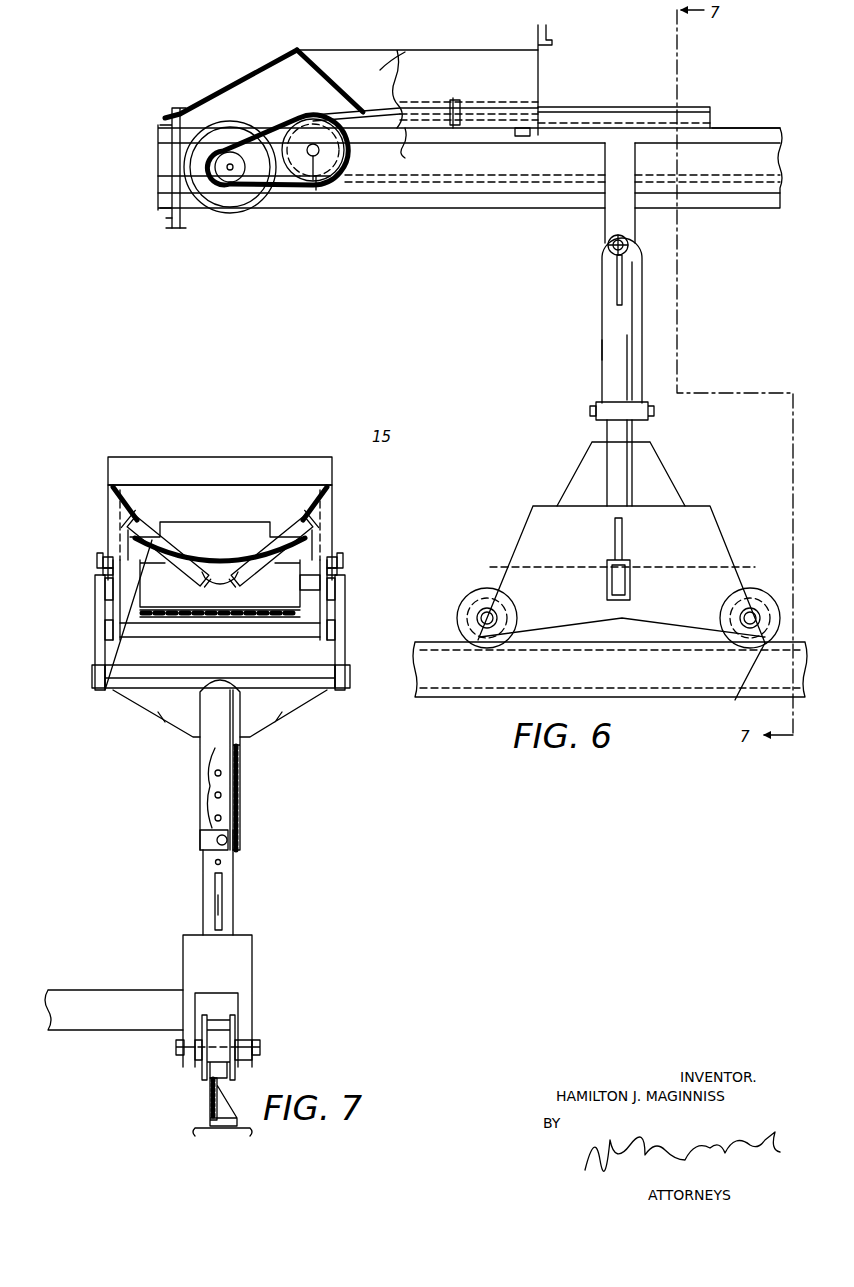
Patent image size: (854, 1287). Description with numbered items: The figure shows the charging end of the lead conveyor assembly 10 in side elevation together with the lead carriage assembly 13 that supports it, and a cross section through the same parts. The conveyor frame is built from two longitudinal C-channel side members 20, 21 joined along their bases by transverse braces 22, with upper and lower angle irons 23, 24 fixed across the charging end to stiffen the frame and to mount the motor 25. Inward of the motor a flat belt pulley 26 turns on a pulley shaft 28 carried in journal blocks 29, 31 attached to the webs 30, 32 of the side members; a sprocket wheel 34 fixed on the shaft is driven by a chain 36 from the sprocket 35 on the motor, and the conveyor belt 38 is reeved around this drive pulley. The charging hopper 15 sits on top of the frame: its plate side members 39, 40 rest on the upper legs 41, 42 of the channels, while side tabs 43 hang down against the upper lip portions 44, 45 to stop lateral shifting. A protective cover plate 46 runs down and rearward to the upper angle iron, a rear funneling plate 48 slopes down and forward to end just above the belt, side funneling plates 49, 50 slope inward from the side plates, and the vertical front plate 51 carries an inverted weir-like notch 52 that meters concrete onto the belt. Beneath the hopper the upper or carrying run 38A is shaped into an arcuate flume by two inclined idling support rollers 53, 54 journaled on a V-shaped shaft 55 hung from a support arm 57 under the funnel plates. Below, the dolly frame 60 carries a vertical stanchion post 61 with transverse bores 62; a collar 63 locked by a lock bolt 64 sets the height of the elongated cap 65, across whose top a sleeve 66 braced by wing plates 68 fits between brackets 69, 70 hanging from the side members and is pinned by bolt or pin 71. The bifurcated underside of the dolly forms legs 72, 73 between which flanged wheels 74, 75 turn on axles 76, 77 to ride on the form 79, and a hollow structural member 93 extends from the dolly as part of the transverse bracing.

In FIG. 6, the lead conveyor assembly 10 is at (725, 120).
In FIG. 6, the lead carriage assembly 13 is at (590, 350).
In FIG. 7, the lead carriage assembly 13 is at (268, 887).
In FIG. 6, the charging hopper 15 is at (295, 44).
In FIG. 6, the longitudinal C-channel structural side member 20 is at (512, 170).
In FIG. 7, the longitudinal C-channel structural side member 20 is at (95, 580).
In FIG. 6, the longitudinal C-channel structural side member 21 is at (375, 200).
In FIG. 7, the longitudinal C-channel structural side member 21 is at (338, 582).
In FIG. 7, the transverse brace 22 is at (130, 635).
In FIG. 6, the upper angle iron 23 is at (176, 110).
In FIG. 6, the lower angle iron 24 is at (170, 214).
In FIG. 6, the motor 25 is at (218, 190).
In FIG. 6, the flat belt pulley 26 is at (318, 165).
In FIG. 7, the flat belt pulley 26 is at (220, 583).
In FIG. 6, the pulley shaft 28 is at (327, 160).
In FIG. 7, the pulley shaft 28 is at (327, 606).
In FIG. 7, the journal block 29 is at (105, 592).
In FIG. 7, the web 30 is at (113, 608).
In FIG. 7, the journal block 31 is at (335, 596).
In FIG. 7, the web 32 is at (327, 590).
In FIG. 6, the sprocket wheel 34 is at (302, 192).
In FIG. 7, the sprocket wheel 34 is at (128, 548).
In FIG. 6, the sprocket 35 is at (236, 176).
In FIG. 6, the chain 36 is at (282, 187).
In FIG. 6, the conveyor belt 38 is at (384, 190).
In FIG. 7, the conveyor belt 38 is at (192, 620).
In FIG. 6, the upper or carrying run 38A is at (598, 100).
In FIG. 7, the upper or carrying run 38A is at (198, 540).
In FIG. 6, the plate side member 39 is at (452, 66).
In FIG. 7, the plate side member 39 is at (112, 508).
In FIG. 7, the plate side member 40 is at (320, 505).
In FIG. 7, the upper leg 41 is at (108, 558).
In FIG. 7, the upper leg 42 is at (333, 556).
In FIG. 6, the side tab 43 is at (526, 137).
In FIG. 7, the side tab 43 is at (343, 560).
In FIG. 7, the upper lip portion 44 is at (103, 571).
In FIG. 7, the upper lip portion 45 is at (337, 572).
In FIG. 6, the protective cover plate 46 is at (232, 86).
In FIG. 6, the rear funneling plate 48 is at (332, 74).
In FIG. 7, the side funneling plate 49 is at (147, 530).
In FIG. 6, the side funneling plate 50 is at (372, 72).
In FIG. 7, the side funneling plate 50 is at (303, 530).
In FIG. 6, the vertical front plate 51 is at (542, 82).
In FIG. 7, the vertical front plate 51 is at (228, 500).
In FIG. 7, the inverted weir-like notch 52 is at (228, 528).
In FIG. 6, the angularly inclined idling support roller 53 is at (468, 112).
In FIG. 7, the angularly inclined idling support roller 53 is at (112, 628).
In FIG. 7, the angularly inclined idling support roller 54 is at (258, 625).
In FIG. 7, the V-shaped shaft 55 is at (208, 584).
In FIG. 7, the support arm 57 is at (312, 525).
In FIG. 6, the dolly frame 60 is at (530, 523).
In FIG. 7, the dolly frame 60 is at (194, 958).
In FIG. 6, the stanchion post 61 is at (608, 436).
In FIG. 7, the stanchion post 61 is at (210, 866).
In FIG. 7, the transverse bore 62 is at (222, 818).
In FIG. 6, the collar 63 is at (648, 415).
In FIG. 7, the collar 63 is at (240, 842).
In FIG. 6, the lock bolt 64 is at (596, 412).
In FIG. 7, the lock bolt 64 is at (214, 840).
In FIG. 6, the elongated cap 65 is at (604, 310).
In FIG. 7, the elongated cap 65 is at (205, 748).
In FIG. 7, the sleeve 66 is at (140, 700).
In FIG. 6, the wing plate 68 is at (625, 280).
In FIG. 7, the wing plate 68 is at (280, 718).
In FIG. 6, the bracket 69 is at (614, 210).
In FIG. 7, the bracket 69 is at (105, 626).
In FIG. 7, the bracket 70 is at (336, 645).
In FIG. 6, the bolt or pin 71 is at (607, 243).
In FIG. 7, the bolt or pin 71 is at (345, 680).
In FIG. 6, the leg 72 is at (621, 574).
In FIG. 7, the leg 72 is at (192, 1056).
In FIG. 7, the leg 73 is at (245, 1058).
In FIG. 6, the flanged wheel 74 is at (730, 695).
In FIG. 7, the flanged wheel 74 is at (205, 1068).
In FIG. 6, the flanged wheel 75 is at (468, 598).
In FIG. 6, the axle 76 is at (752, 612).
In FIG. 7, the axle 76 is at (260, 1047).
In FIG. 6, the axle 77 is at (480, 618).
In FIG. 6, the form 79 is at (610, 669).
In FIG. 7, the form 79 is at (205, 1098).
In FIG. 6, the hollow square or rectilinear structural member 93 is at (607, 580).
In FIG. 7, the hollow square or rectilinear structural member 93 is at (92, 1018).